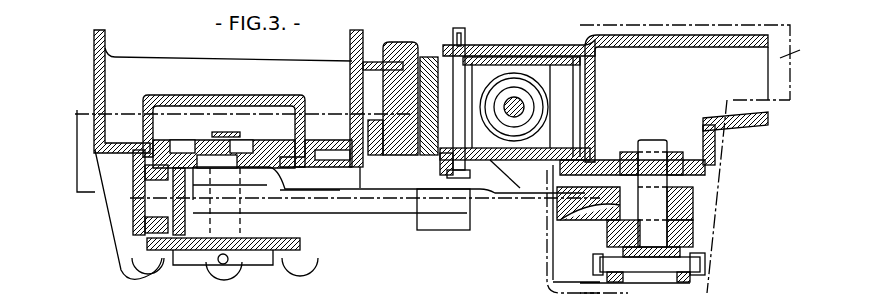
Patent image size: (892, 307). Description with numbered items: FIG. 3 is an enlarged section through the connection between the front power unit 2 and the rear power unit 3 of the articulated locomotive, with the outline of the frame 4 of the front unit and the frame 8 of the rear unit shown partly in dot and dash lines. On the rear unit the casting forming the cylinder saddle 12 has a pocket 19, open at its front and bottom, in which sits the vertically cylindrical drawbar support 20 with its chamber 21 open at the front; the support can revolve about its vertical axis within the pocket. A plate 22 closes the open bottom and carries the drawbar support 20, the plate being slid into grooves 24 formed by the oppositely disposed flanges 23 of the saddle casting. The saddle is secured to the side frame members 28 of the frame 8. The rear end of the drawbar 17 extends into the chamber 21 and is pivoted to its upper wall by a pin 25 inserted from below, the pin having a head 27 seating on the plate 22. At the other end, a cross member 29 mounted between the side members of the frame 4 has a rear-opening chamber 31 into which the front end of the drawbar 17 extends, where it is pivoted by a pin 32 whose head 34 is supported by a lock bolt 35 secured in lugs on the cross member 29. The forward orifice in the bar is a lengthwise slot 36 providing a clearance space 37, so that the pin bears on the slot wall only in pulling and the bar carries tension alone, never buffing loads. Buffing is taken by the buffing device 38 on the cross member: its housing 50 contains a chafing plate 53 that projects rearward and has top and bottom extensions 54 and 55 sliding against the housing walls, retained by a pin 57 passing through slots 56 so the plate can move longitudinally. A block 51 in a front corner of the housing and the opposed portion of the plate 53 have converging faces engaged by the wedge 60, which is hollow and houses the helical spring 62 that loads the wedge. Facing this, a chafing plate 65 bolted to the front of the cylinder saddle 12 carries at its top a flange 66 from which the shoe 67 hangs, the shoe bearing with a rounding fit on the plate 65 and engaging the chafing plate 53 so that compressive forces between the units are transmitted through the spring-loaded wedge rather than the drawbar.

The front power unit 2 is at (776, 96).
The rear power unit 3 is at (78, 128).
The frame 4 is at (698, 62).
The frame 8 is at (85, 165).
The cylinder saddle 12 is at (142, 62).
The drawbar 17 is at (378, 207).
The pocket 19 is at (327, 147).
The drawbar support 20 is at (157, 218).
The chamber 21 is at (262, 170).
The plate 22 is at (250, 240).
The flanges 23 is at (307, 260).
The grooves 24 is at (140, 257).
The pin 25 is at (222, 132).
The head 27 is at (207, 272).
The side frame members 28 is at (93, 192).
The cross member 29 is at (676, 100).
The chamber 31 is at (688, 150).
The pin 32 is at (648, 147).
The head 34 is at (677, 250).
The lock bolt 35 is at (668, 265).
The slots 36 is at (578, 230).
The clearance space 37 is at (627, 180).
The buffing device 38 is at (488, 45).
The housing 50 is at (527, 172).
The block 51 is at (545, 100).
The chafing plate 53 is at (427, 163).
The top extension 54 is at (527, 53).
The bottom extension 55 is at (477, 170).
The slots 56 is at (443, 60).
The retaining pin 57 is at (466, 32).
The wedge 60 is at (565, 113).
The helical spring 62 is at (552, 80).
The chafing plate 65 is at (377, 58).
The flange 66 is at (347, 62).
The shoe 67 is at (387, 53).